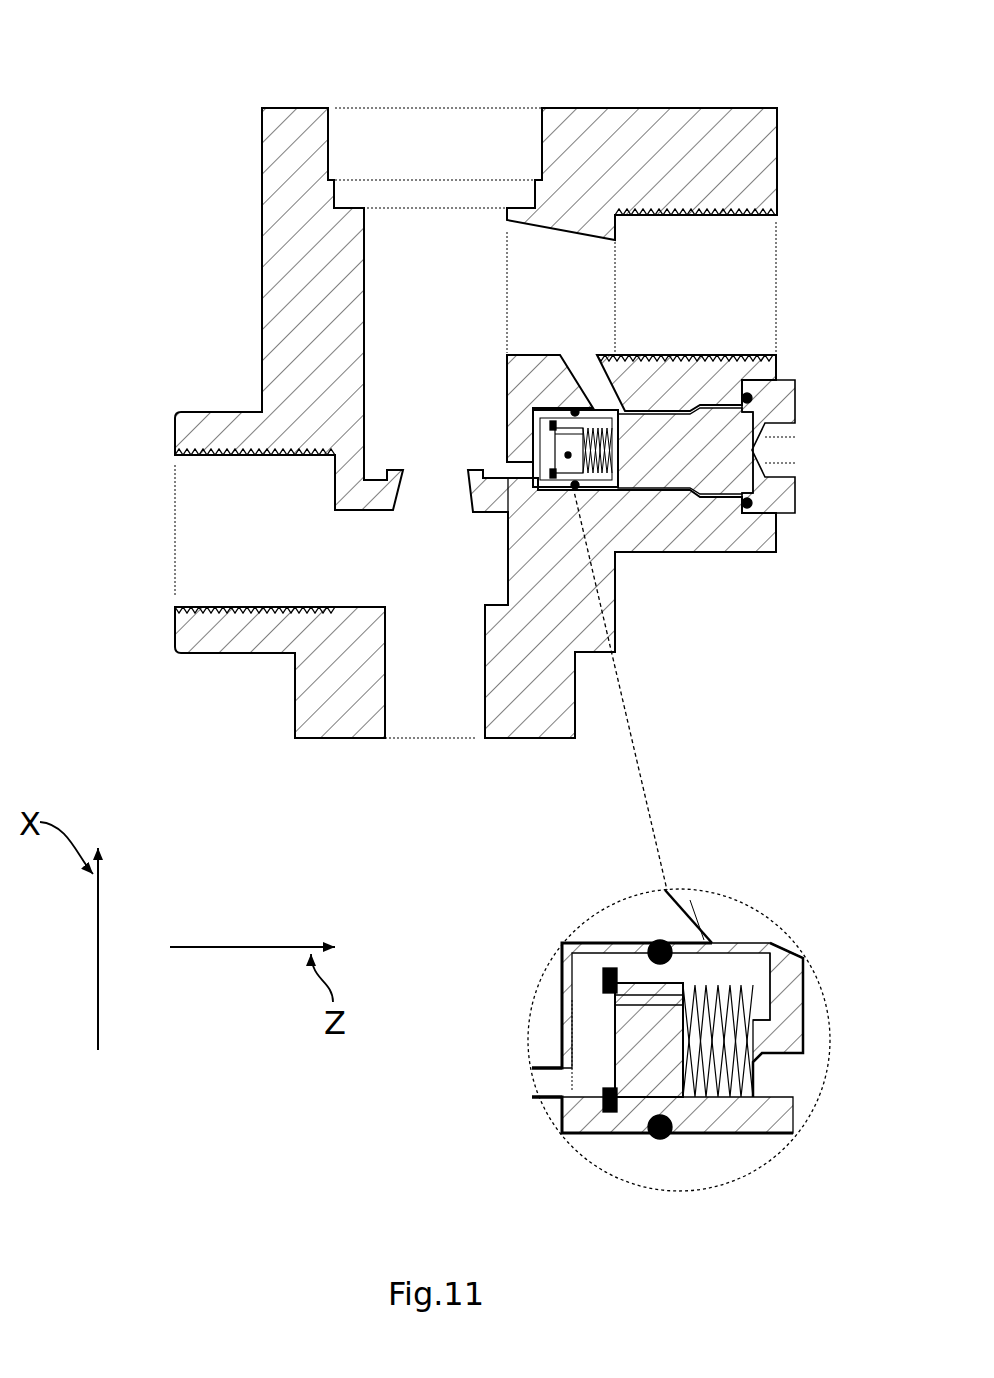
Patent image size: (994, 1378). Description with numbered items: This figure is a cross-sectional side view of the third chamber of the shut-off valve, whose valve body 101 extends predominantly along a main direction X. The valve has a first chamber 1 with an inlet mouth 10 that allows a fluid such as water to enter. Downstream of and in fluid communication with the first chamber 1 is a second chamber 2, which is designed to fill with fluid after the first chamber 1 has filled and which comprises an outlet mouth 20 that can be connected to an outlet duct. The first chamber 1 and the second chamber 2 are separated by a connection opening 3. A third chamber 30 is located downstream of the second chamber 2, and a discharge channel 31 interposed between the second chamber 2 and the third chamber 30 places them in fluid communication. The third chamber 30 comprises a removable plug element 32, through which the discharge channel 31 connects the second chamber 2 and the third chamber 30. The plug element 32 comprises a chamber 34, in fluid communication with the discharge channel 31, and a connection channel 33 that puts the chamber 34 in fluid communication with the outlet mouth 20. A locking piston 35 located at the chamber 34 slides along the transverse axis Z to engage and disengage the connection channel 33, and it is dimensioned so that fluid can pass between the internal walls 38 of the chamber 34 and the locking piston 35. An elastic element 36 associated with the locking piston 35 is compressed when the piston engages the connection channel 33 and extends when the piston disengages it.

The first chamber 1 is at (452, 687).
The second chamber 2 is at (436, 283).
The connection opening 3 is at (425, 466).
The inlet mouth 10 is at (262, 513).
The outlet mouth 20 is at (548, 263).
The third chamber 30 is at (625, 407).
The discharge channel 31 is at (523, 472).
The plug element 32 is at (725, 435).
The connection channel 33 is at (782, 1017).
The chamber 34 is at (561, 1078).
The locking piston 35 is at (653, 1055).
The elastic element 36 is at (724, 1046).
The internal walls 38 is at (588, 983).
The valve body 101 is at (348, 296).